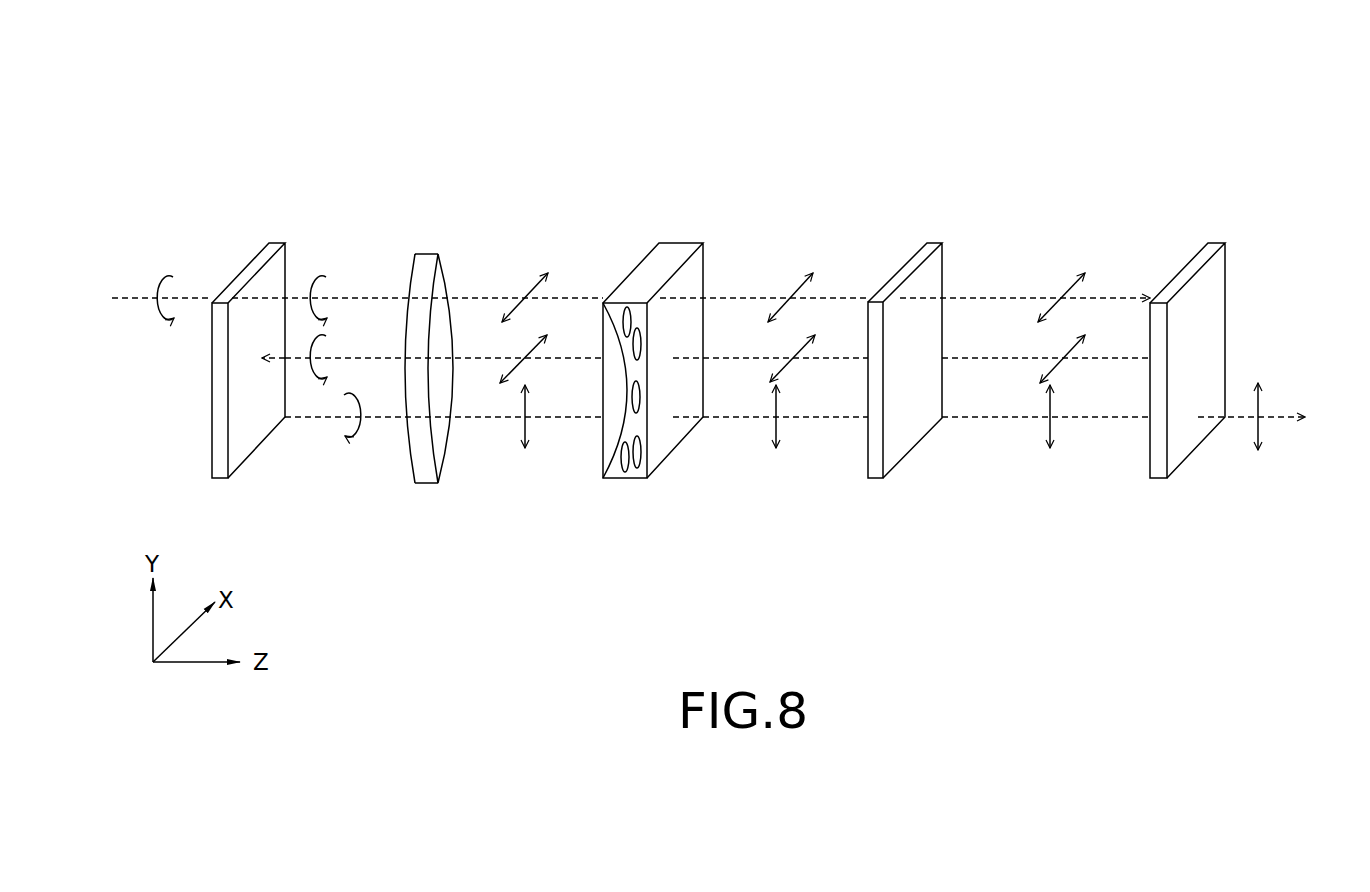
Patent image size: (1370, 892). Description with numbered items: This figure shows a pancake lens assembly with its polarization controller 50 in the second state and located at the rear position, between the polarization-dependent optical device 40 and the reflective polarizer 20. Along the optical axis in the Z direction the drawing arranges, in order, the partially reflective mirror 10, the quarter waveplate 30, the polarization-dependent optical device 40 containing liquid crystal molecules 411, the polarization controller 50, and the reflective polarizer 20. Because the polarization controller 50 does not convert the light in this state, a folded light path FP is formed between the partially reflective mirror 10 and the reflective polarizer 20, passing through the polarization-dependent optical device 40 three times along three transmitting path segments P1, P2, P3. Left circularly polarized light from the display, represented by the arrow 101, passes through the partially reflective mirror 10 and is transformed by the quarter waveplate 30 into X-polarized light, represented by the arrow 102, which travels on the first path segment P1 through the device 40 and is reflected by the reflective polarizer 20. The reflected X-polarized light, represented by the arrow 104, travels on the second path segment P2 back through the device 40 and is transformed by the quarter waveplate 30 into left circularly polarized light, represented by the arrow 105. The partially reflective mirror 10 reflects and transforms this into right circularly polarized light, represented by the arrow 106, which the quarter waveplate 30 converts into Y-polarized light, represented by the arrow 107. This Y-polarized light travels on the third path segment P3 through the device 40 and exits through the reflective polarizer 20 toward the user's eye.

The partially reflective mirror 10 is at (252, 248).
The reflective polarizer 20 is at (1195, 248).
The quarter waveplate 30 is at (427, 250).
The polarization-dependent optical device 40 is at (660, 343).
The polarization controller 50 is at (913, 245).
The arrow representing L-circularly polarized light 101 is at (172, 277).
The arrow representing X-polarized light 102 is at (530, 290).
The arrow representing reflected X-polarized light 104 is at (522, 360).
The arrow representing L-circularly polarized light 105 is at (305, 354).
The arrow representing R-circularly polarized light 106 is at (362, 437).
The arrow representing Y-polarized light 107 is at (525, 420).
The liquid crystal molecules 411 is at (640, 457).
The folded light path FP is at (388, 248).
The first transmitting path segment P1 is at (580, 290).
The second transmitting path segment P2 is at (730, 355).
The third transmitting path segment P3 is at (722, 420).